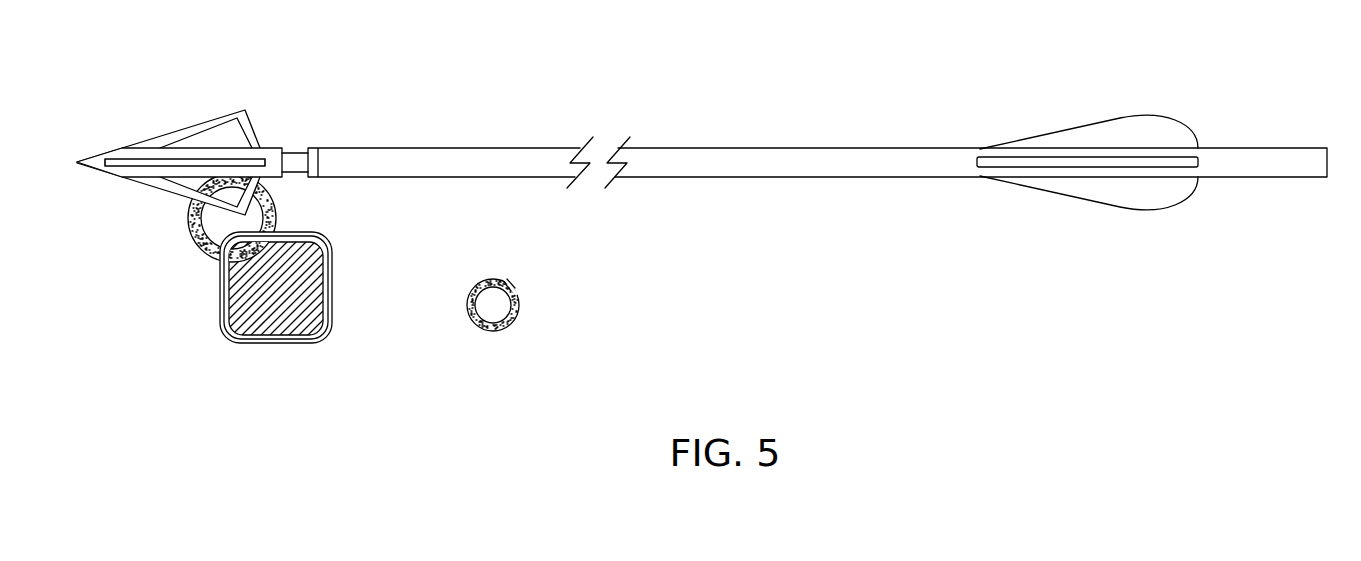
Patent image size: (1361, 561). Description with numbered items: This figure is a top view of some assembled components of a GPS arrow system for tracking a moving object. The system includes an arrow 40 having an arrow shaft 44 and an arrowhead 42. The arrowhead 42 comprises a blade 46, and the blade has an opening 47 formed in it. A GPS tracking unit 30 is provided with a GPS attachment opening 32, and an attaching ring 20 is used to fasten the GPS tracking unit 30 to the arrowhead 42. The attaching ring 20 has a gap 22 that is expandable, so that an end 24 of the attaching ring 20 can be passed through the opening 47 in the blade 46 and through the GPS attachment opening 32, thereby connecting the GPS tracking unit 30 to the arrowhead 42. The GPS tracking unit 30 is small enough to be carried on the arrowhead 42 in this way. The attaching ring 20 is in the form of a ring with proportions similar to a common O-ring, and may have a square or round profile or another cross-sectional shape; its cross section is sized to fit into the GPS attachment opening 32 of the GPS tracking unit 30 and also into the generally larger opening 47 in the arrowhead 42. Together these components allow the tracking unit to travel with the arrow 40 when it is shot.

The attaching ring 20 is at (471, 288).
The gap 22 is at (505, 267).
The end 24 is at (507, 272).
The GPS tracking unit 30 is at (290, 313).
The GPS attachment opening 32 is at (221, 291).
The arrow 40 is at (702, 154).
The arrowhead 42 is at (205, 160).
The arrow shaft 44 is at (540, 150).
The blade 46 is at (168, 194).
The opening 47 is at (225, 140).